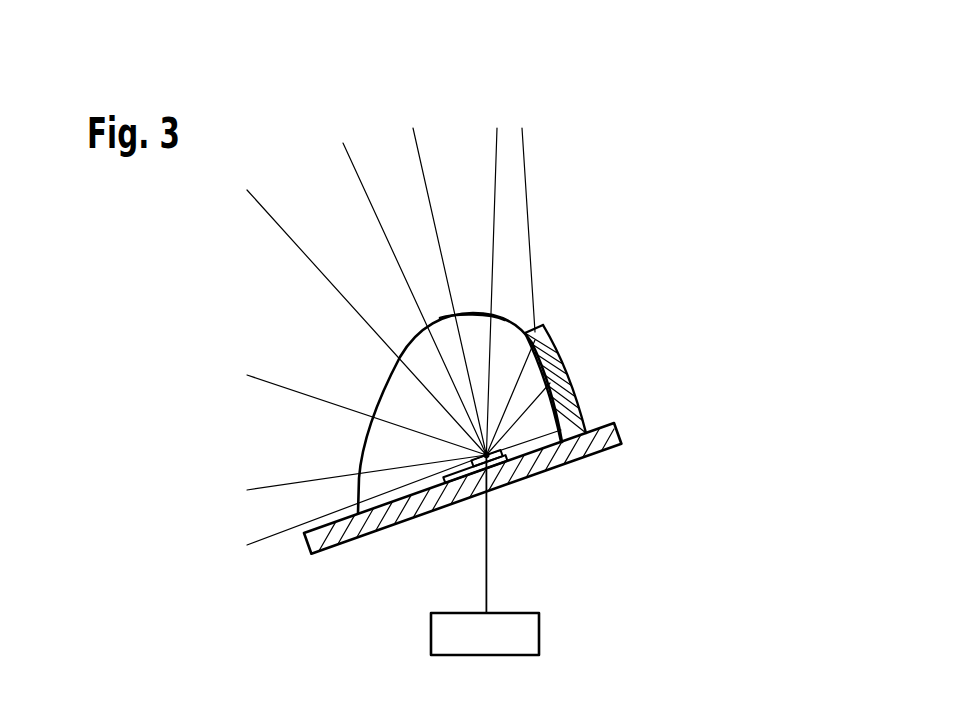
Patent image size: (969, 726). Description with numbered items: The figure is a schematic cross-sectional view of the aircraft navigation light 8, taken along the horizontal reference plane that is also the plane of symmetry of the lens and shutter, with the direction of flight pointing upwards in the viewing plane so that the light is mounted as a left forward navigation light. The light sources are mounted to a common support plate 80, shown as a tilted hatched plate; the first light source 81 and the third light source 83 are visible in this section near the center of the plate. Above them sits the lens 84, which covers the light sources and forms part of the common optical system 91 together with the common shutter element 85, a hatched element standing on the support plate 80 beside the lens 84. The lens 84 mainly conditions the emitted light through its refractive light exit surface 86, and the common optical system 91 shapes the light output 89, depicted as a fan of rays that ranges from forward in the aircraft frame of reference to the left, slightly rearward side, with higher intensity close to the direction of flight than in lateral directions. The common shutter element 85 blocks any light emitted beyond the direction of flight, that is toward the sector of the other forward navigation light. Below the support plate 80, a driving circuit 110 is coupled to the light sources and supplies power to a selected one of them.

The aircraft navigation light 8 is at (251, 271).
The common support plate 80 is at (600, 440).
The first light source 81 is at (503, 466).
The third light source 83 is at (463, 474).
The lens 84 is at (517, 304).
The common shutter element 85 is at (560, 345).
The refractive light exit surface 86 is at (433, 309).
The light output 89 is at (548, 170).
The common optical system 91 is at (638, 267).
The driving circuit 110 is at (517, 634).